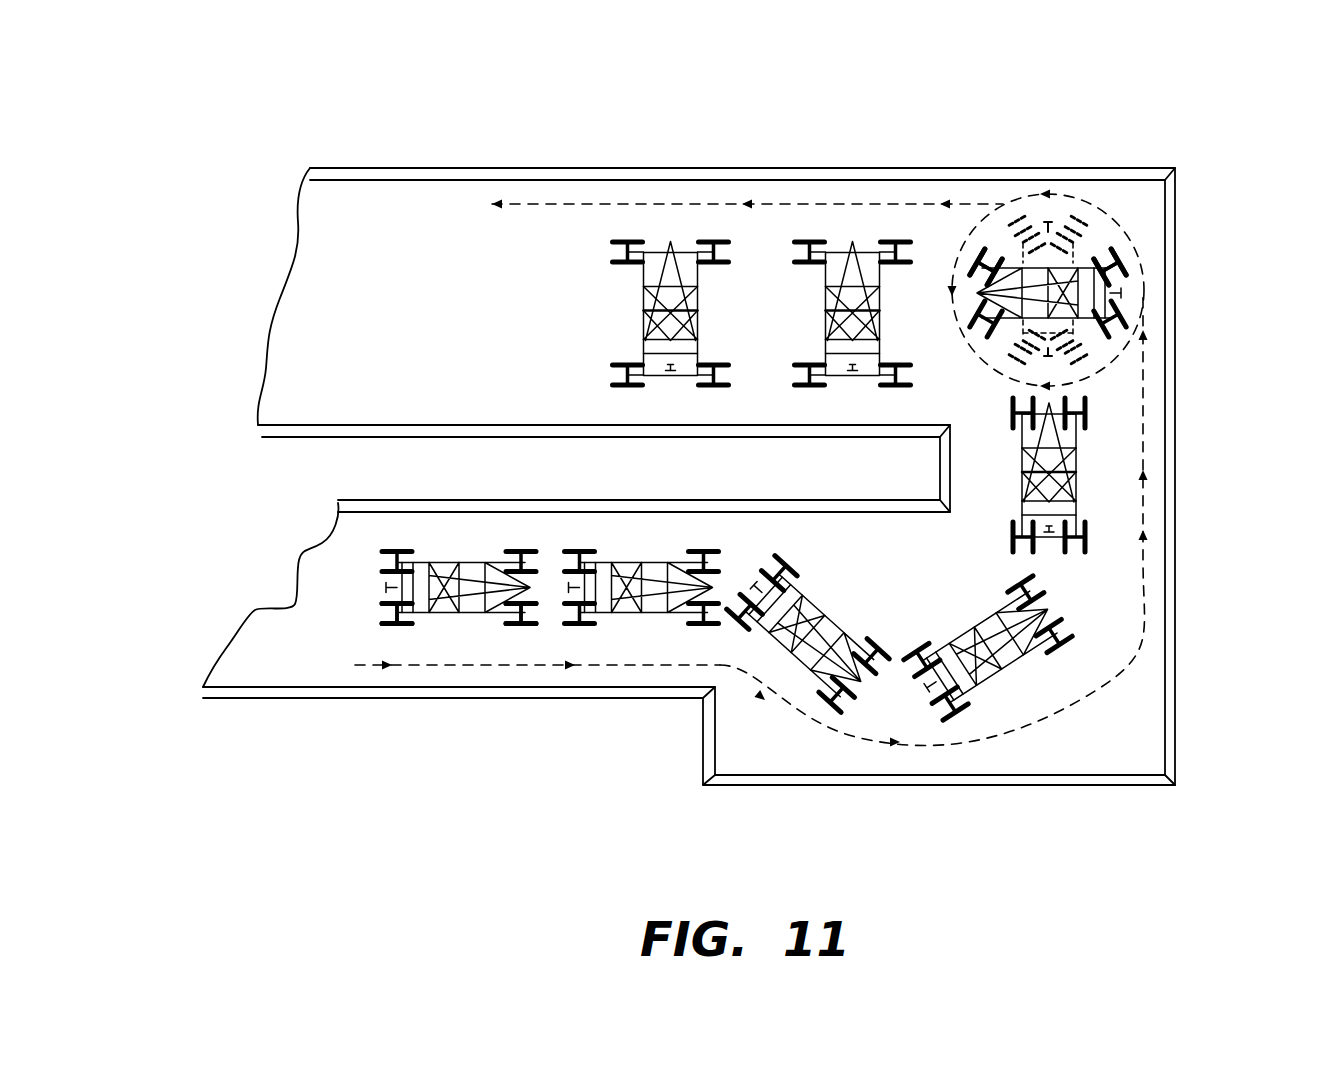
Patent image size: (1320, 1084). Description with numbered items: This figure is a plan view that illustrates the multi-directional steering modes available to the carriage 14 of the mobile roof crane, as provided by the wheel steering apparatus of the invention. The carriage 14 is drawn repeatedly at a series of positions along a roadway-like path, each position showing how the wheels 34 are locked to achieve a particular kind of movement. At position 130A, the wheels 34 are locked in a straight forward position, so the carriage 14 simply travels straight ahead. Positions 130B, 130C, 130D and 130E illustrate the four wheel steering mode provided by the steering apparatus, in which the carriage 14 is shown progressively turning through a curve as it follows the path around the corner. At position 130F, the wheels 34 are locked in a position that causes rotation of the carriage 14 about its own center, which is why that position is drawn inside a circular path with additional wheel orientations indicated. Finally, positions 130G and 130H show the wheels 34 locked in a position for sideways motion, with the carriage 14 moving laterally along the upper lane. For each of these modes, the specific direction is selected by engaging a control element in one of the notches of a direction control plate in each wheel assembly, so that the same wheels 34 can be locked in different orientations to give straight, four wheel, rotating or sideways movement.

The carriage 14 is at (1078, 322).
The wheels 34 is at (983, 258).
The position 130A is at (448, 613).
The position 130B is at (624, 617).
The position 130C is at (792, 648).
The position 130D is at (997, 662).
The position 130E is at (1068, 457).
The position 130F is at (1110, 295).
The position 130G is at (865, 256).
The position 130H is at (685, 256).